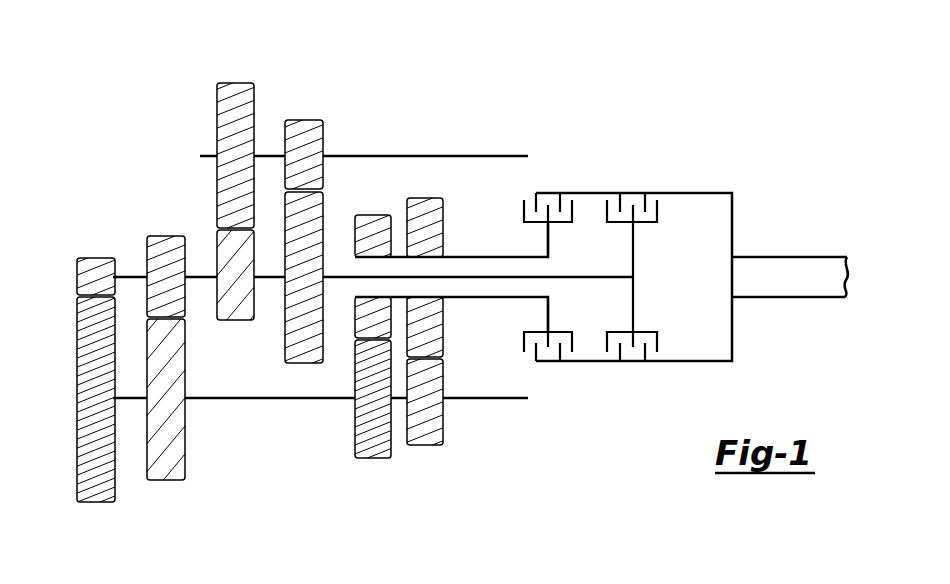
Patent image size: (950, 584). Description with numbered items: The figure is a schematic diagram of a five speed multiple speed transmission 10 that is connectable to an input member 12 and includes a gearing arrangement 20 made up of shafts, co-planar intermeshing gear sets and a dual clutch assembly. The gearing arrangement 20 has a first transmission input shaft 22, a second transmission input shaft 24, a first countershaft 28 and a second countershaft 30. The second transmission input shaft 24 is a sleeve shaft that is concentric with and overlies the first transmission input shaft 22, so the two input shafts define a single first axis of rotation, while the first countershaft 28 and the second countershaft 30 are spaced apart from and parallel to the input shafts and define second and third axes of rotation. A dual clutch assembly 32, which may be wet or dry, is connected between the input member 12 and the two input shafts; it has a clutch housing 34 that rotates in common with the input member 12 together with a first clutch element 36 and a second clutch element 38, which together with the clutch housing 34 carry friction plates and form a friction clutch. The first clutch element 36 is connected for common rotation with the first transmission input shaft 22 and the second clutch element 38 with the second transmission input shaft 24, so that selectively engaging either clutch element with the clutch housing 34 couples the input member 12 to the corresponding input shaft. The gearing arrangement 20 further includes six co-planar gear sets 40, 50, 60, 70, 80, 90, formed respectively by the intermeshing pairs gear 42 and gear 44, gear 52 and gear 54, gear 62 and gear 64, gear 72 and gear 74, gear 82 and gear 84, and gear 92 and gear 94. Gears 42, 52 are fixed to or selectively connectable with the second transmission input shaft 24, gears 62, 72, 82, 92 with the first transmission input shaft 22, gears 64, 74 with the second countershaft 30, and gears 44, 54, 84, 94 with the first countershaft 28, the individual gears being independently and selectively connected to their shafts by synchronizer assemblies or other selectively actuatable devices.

The multiple speed transmission 10 is at (570, 94).
The input member 12 is at (825, 256).
The gearing arrangement 20 is at (137, 77).
The first transmission input shaft 22 is at (505, 298).
The second transmission input shaft 24 is at (497, 256).
The first countershaft 28 is at (497, 399).
The second countershaft 30 is at (488, 155).
The dual clutch assembly 32 is at (673, 233).
The clutch housing 34 is at (733, 348).
The first clutch element 36 is at (633, 312).
The second clutch element 38 is at (548, 318).
The co-planar gear set 40 is at (272, 292).
The gear 42 is at (425, 197).
The gear 44 is at (423, 446).
The co-planar gear set 50 is at (265, 292).
The gear 52 is at (375, 214).
The gear 54 is at (373, 459).
The co-planar gear set 60 is at (265, 292).
The gear 62 is at (304, 364).
The gear 64 is at (305, 119).
The co-planar gear set 70 is at (265, 292).
The gear 72 is at (234, 321).
The gear 74 is at (236, 82).
The co-planar gear set 80 is at (265, 292).
The gear 82 is at (166, 236).
The gear 84 is at (165, 482).
The co-planar gear set 90 is at (260, 292).
The gear 92 is at (97, 257).
The gear 94 is at (97, 503).